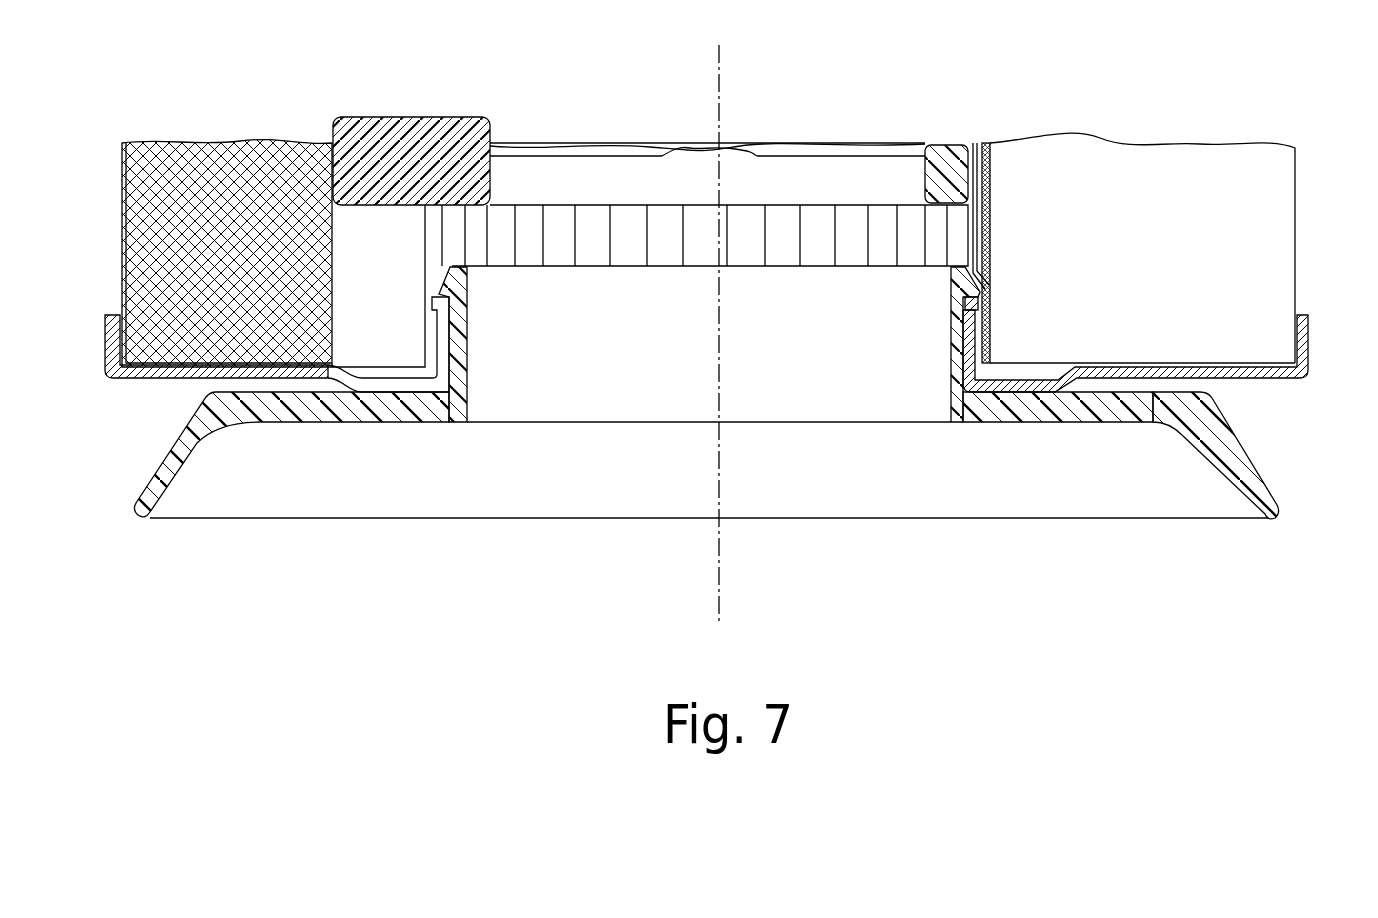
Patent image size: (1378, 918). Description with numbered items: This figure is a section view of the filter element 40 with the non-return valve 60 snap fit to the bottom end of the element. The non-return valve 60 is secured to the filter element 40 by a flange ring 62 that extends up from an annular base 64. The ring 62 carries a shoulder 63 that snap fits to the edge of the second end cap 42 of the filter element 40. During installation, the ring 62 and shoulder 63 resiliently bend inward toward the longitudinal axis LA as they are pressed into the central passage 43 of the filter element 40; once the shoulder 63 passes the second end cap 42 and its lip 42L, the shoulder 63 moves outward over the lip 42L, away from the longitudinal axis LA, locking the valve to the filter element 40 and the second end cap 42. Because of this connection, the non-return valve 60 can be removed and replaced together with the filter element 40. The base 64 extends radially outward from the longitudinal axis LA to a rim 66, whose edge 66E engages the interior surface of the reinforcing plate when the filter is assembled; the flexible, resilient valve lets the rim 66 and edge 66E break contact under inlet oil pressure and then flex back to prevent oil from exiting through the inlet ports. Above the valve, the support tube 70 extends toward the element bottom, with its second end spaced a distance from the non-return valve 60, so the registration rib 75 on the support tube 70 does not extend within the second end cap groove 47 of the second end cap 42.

The filter element 40 is at (1302, 166).
The second end cap 42 is at (1310, 327).
The lip 42L is at (982, 303).
The central passage 43 is at (766, 256).
The second end cap groove 47 is at (383, 390).
The non-return valve 60 is at (749, 480).
The flange ring 62 is at (950, 357).
The shoulder 63 is at (975, 285).
The annular base 64 is at (1068, 405).
The rim 66 is at (1236, 442).
The edge 66E is at (1276, 520).
The support tube 70 is at (900, 148).
The registration rib 75 is at (400, 148).
The longitudinal axis LA is at (721, 609).